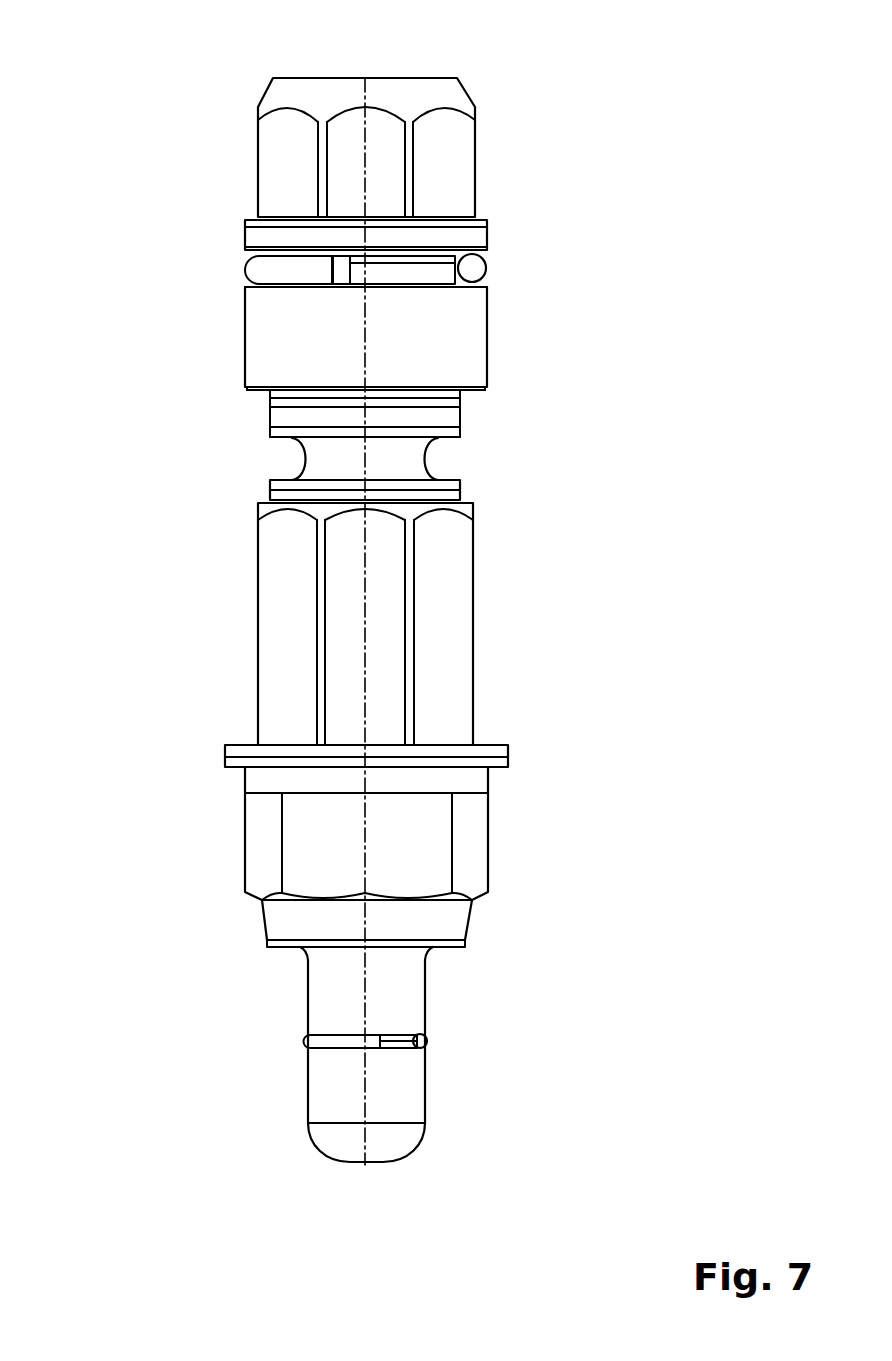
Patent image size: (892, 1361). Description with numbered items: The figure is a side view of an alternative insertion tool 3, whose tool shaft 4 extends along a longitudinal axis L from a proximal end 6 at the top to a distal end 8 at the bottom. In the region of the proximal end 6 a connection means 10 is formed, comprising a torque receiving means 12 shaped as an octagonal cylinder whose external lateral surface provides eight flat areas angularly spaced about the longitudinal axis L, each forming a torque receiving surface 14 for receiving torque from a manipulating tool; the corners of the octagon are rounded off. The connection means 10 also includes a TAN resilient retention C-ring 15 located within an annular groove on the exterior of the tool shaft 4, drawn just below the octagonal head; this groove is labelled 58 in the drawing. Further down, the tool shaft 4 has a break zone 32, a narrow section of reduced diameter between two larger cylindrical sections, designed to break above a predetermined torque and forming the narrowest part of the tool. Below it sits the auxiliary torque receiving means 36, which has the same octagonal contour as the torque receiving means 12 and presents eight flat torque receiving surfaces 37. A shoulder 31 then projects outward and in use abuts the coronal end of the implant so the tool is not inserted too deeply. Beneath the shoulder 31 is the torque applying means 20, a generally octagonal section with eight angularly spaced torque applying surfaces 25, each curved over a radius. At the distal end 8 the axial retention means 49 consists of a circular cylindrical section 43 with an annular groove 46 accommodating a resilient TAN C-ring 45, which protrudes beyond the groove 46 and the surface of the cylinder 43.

The insertion tool 3 is at (124, 419).
The tool shaft 4 is at (480, 518).
The proximal end 6 is at (447, 73).
The distal end 8 is at (393, 1163).
The connection means 10 is at (220, 310).
The torque receiving means 12 is at (477, 151).
The torque receiving surface 14 is at (281, 172).
The resilient retention C-ring 15 is at (489, 267).
The torque applying means 20 is at (500, 788).
The torque applying surface 25 is at (363, 842).
The shoulder 31 is at (495, 743).
The break zone 32 is at (446, 460).
The auxiliary torque receiving means 36 is at (240, 510).
The torque receiving surface 37 is at (278, 635).
The circular cylindrical section 43 is at (300, 995).
The resilient C-ring 45 is at (300, 1040).
The annular groove 46 is at (443, 1018).
The axial retention means 49 is at (396, 1066).
The groove 58 is at (467, 246).
The longitudinal axis L is at (368, 76).